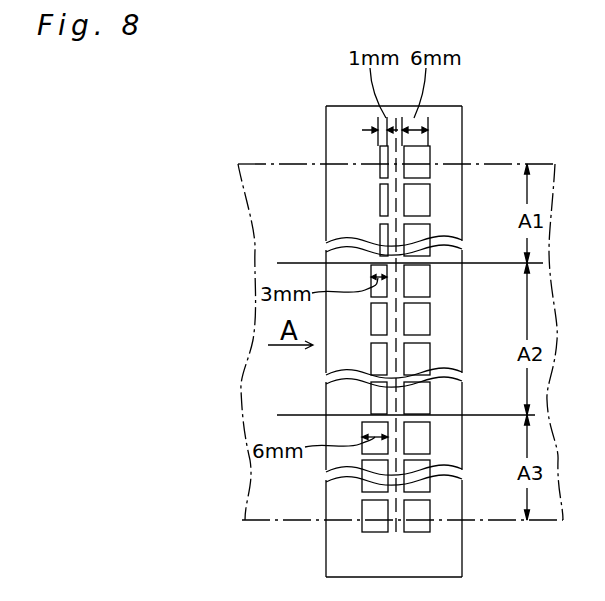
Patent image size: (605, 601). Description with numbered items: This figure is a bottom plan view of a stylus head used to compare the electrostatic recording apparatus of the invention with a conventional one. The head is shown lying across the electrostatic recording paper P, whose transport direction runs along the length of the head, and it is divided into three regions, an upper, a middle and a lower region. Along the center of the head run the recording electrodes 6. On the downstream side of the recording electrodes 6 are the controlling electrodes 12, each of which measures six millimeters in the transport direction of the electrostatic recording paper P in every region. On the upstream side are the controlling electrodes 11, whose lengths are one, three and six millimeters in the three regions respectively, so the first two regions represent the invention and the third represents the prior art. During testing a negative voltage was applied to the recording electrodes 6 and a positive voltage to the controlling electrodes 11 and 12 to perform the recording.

The electrostatic recording paper P is at (255, 170).
The recording electrodes 6 is at (393, 315).
The controlling electrodes 11 is at (382, 200).
The controlling electrodes 12 is at (418, 198).